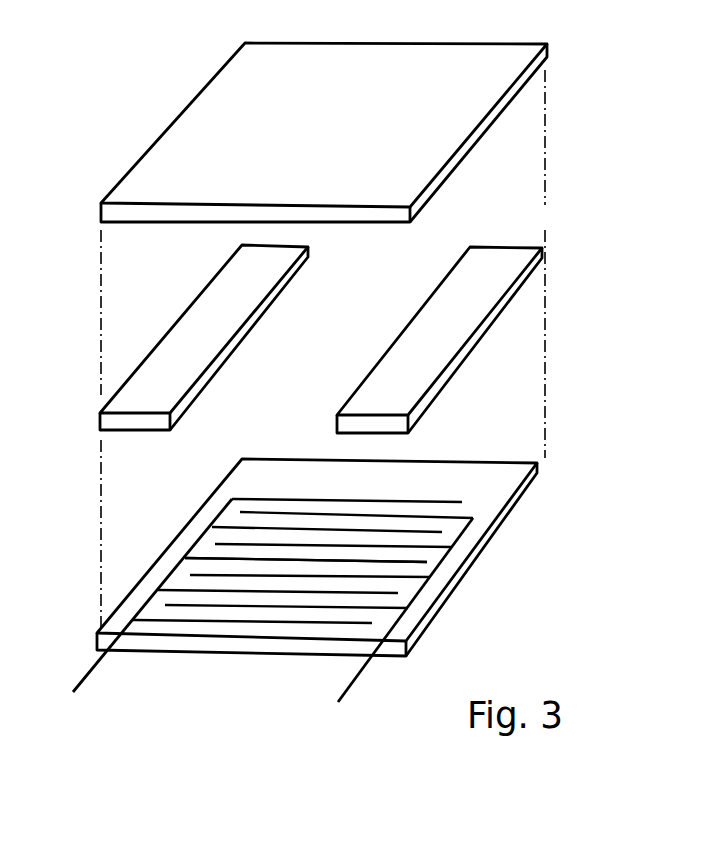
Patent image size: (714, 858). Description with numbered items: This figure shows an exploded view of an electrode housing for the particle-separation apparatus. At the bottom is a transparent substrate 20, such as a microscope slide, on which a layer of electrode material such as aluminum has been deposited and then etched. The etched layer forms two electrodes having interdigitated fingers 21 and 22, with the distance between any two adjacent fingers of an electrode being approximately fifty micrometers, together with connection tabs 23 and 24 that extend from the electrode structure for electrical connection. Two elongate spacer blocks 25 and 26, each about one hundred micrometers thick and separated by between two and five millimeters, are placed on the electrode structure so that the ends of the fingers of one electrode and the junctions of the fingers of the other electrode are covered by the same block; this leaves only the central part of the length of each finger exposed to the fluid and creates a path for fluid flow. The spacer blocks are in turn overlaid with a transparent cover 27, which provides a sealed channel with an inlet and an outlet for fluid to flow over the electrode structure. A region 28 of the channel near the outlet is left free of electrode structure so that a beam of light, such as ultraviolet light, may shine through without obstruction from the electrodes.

The transparent substrate 20 is at (442, 598).
The interdigitated fingers 21 is at (484, 530).
The interdigitated fingers 22 is at (205, 555).
The connection tab 23 is at (94, 665).
The connection tab 24 is at (349, 689).
The elongate spacer block 25 is at (465, 355).
The elongate spacer block 26 is at (258, 320).
The transparent cover 27 is at (470, 143).
The region of the channel 28 is at (377, 475).